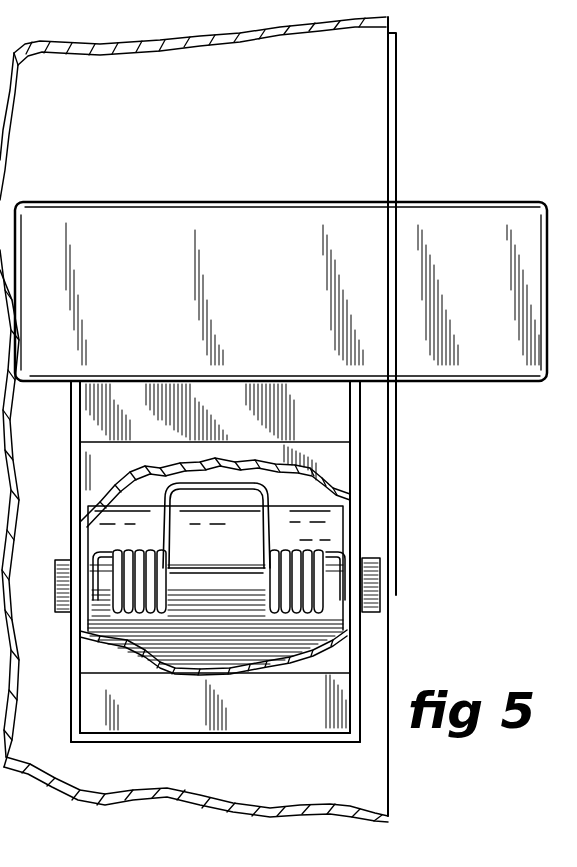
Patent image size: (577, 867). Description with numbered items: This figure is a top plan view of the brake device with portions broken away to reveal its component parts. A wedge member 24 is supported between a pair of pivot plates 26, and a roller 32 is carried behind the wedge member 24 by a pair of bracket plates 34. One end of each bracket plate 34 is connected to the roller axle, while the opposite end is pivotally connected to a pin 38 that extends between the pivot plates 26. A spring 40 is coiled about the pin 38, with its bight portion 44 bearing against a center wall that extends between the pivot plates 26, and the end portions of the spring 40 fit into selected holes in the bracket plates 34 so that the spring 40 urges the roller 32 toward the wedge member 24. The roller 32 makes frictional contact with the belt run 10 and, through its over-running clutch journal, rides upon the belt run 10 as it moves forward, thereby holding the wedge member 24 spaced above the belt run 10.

The belt run 10 is at (216, 778).
The wedge member 24 is at (260, 737).
The pivot plates 26 is at (68, 474).
The roller 32 is at (290, 522).
The bracket plates 34 is at (85, 618).
The pin 38 is at (226, 568).
The spring 40 is at (138, 558).
The bight portion 44 is at (195, 484).